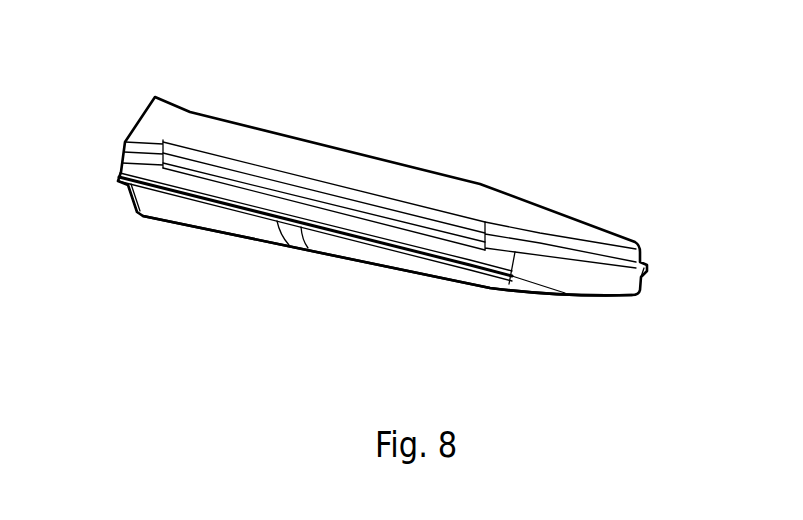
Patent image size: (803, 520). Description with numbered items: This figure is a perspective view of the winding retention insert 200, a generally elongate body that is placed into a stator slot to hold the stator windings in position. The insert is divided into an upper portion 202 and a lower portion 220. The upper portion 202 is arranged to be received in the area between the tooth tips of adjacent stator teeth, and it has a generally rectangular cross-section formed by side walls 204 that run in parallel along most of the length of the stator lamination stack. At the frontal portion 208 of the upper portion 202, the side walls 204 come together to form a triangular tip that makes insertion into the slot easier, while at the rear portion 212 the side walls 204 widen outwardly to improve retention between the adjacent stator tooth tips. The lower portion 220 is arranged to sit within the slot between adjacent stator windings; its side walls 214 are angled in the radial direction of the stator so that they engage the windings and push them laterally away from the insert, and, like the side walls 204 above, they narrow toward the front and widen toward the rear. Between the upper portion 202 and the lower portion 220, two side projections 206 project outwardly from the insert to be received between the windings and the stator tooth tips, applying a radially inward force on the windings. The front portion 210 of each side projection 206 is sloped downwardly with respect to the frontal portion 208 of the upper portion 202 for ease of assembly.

The winding retention insert 200 is at (384, 195).
The upper portion 202 is at (410, 174).
The side walls 204 is at (375, 210).
The side projections 206 is at (277, 222).
The frontal portion 208 is at (607, 252).
The front portion 210 is at (607, 285).
The rear portion 212 is at (137, 161).
The side walls 214 is at (457, 272).
The lower portion 220 is at (185, 240).